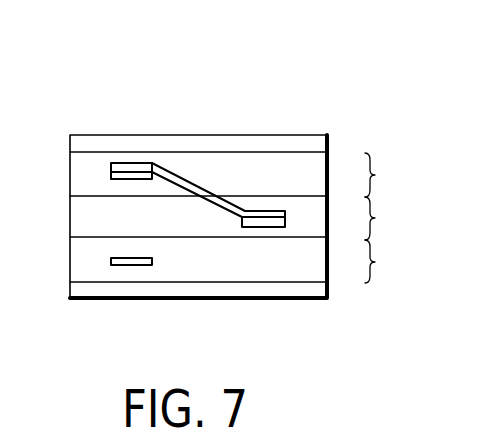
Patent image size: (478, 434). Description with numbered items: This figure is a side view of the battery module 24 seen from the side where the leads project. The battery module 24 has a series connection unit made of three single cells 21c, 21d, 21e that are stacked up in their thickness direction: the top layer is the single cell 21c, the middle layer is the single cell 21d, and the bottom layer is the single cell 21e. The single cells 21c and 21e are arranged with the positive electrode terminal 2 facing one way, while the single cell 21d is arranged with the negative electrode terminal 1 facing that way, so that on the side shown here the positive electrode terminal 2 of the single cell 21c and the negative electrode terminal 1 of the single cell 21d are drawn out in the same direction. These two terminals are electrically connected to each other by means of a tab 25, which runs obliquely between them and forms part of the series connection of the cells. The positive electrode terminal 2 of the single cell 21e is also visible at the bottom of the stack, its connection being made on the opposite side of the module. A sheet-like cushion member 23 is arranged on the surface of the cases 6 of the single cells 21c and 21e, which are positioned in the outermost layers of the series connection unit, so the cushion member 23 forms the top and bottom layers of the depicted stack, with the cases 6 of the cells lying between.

The battery module 24 is at (333, 74).
The cushion member 23 is at (262, 145).
The case 6 is at (70, 152).
The positive electrode terminal 2 is at (111, 175).
The tab 25 is at (131, 163).
The negative electrode terminal 1 is at (286, 221).
The single cell 21c is at (397, 175).
The single cell 21d is at (399, 218).
The single cell 21e is at (398, 261).